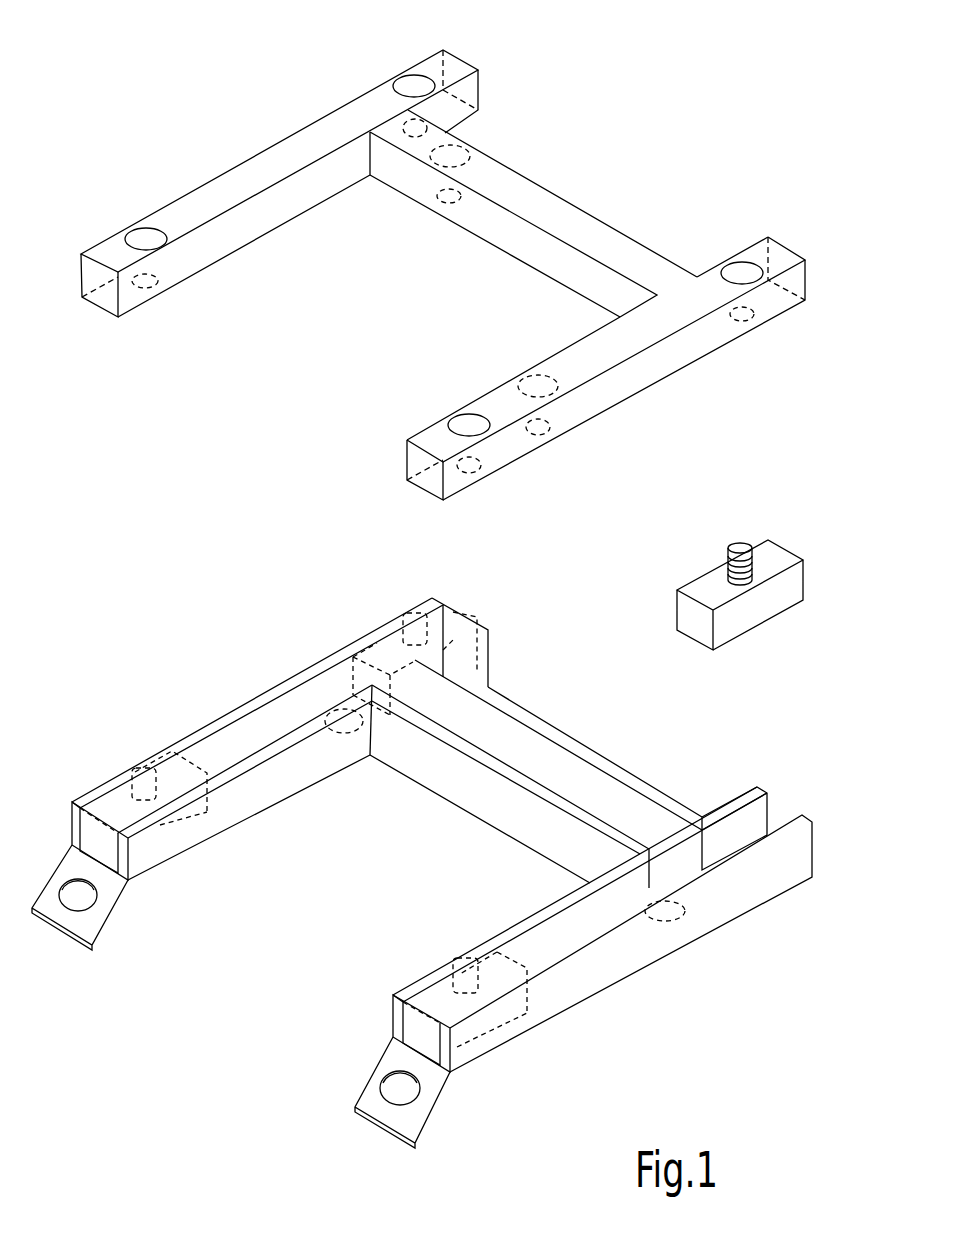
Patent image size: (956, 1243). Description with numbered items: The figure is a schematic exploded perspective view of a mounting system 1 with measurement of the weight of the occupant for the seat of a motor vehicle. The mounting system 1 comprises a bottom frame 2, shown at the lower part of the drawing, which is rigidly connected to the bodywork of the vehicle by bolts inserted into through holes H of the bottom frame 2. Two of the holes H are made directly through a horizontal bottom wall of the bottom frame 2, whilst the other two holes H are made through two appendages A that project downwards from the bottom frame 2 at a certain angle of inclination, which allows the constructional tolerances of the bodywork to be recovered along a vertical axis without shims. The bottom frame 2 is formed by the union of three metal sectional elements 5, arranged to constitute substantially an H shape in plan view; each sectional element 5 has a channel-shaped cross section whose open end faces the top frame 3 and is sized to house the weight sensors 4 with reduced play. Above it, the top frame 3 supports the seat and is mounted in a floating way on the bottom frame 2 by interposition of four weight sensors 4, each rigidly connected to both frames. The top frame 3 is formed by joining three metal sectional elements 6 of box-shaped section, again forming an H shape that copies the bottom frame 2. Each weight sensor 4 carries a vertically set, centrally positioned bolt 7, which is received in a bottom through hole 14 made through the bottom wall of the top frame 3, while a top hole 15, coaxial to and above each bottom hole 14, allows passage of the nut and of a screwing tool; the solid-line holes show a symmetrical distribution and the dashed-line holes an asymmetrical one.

The mounting system 1 is at (246, 953).
The bottom frame 2 is at (642, 995).
The top frame 3 is at (585, 163).
The weight sensor 4 is at (748, 623).
The metal sectional element 5 is at (267, 698).
The metal sectional element 6 is at (277, 153).
The bolt 7 is at (733, 547).
The bottom through hole 14 is at (147, 283).
The top hole 15 is at (413, 93).
The through hole H is at (80, 908).
The appendage A is at (63, 932).